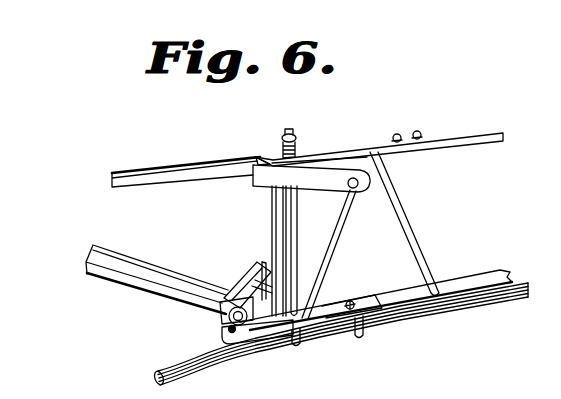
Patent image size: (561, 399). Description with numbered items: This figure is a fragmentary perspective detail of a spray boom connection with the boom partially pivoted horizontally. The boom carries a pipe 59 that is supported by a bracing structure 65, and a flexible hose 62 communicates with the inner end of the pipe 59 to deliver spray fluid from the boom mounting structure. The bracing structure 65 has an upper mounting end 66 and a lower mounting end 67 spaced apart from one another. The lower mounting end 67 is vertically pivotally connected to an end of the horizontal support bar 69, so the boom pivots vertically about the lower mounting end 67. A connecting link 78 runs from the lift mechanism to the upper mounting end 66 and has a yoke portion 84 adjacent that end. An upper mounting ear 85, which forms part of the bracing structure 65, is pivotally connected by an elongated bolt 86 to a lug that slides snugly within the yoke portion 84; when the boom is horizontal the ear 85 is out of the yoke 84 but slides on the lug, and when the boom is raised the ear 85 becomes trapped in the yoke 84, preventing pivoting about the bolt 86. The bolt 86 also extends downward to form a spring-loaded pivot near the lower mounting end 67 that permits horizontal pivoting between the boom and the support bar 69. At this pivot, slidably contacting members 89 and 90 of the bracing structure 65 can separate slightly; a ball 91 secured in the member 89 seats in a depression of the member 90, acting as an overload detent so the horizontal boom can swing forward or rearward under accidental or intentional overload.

The pipe 59 is at (440, 308).
The flexible hose 62 is at (212, 370).
The bracing structure 65 is at (427, 254).
The upper mounting end 66 is at (352, 195).
The lower mounting end 67 is at (250, 267).
The horizontal support bar 69 is at (142, 267).
The connecting link 78 is at (187, 172).
The yoke portion 84 is at (305, 178).
The upper mounting ear 85 is at (318, 148).
The elongated bolt 86 is at (297, 242).
The slidably contacting member 89 is at (265, 327).
The slidably contacting member 90 is at (273, 263).
The ball 91 is at (222, 329).